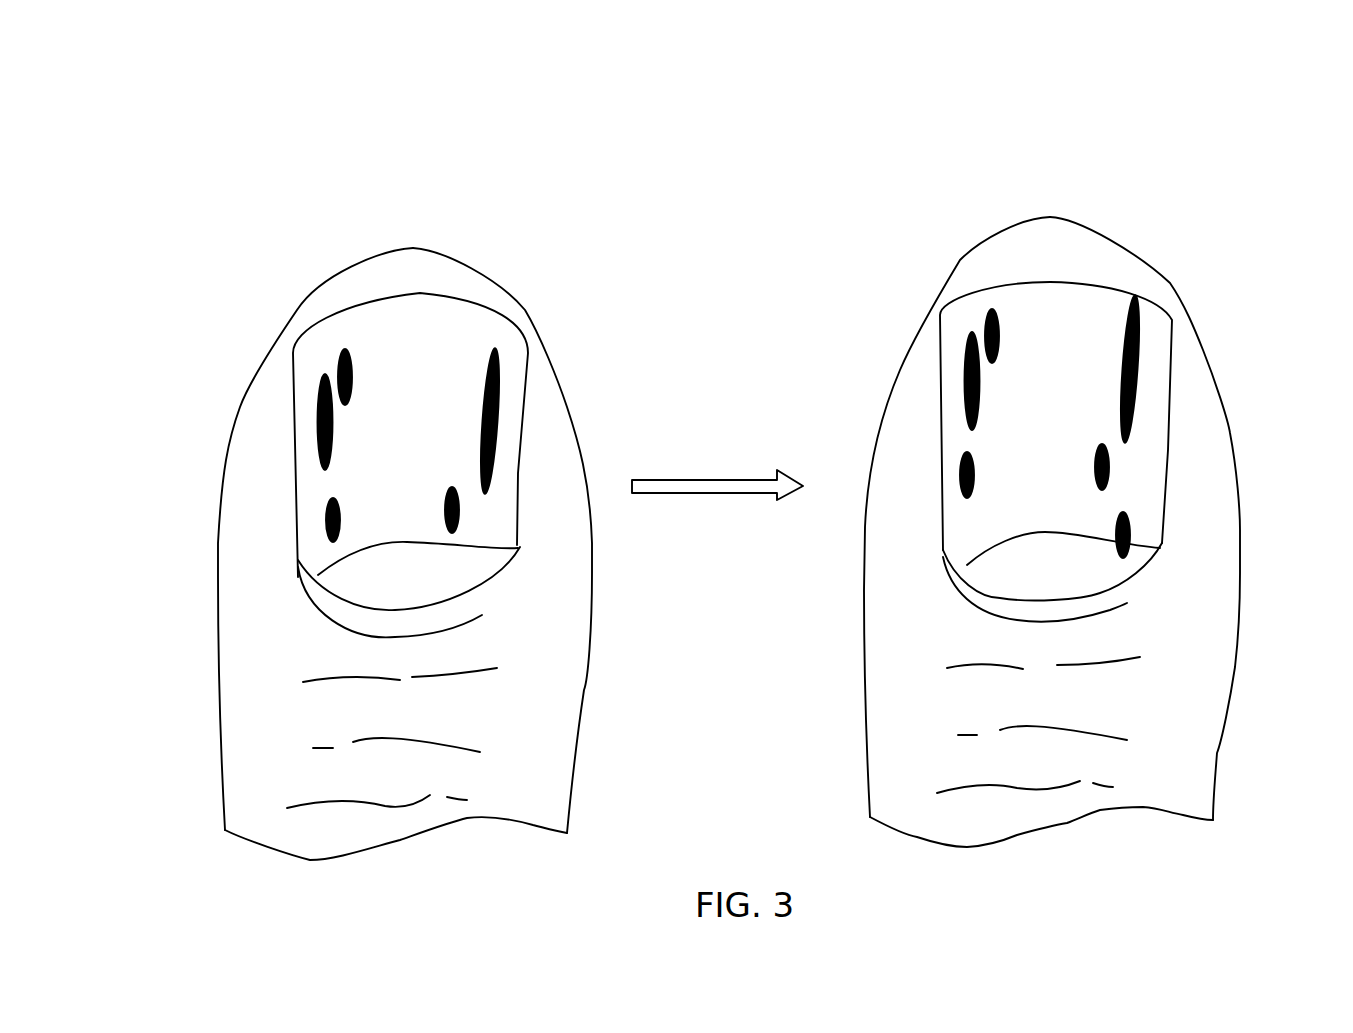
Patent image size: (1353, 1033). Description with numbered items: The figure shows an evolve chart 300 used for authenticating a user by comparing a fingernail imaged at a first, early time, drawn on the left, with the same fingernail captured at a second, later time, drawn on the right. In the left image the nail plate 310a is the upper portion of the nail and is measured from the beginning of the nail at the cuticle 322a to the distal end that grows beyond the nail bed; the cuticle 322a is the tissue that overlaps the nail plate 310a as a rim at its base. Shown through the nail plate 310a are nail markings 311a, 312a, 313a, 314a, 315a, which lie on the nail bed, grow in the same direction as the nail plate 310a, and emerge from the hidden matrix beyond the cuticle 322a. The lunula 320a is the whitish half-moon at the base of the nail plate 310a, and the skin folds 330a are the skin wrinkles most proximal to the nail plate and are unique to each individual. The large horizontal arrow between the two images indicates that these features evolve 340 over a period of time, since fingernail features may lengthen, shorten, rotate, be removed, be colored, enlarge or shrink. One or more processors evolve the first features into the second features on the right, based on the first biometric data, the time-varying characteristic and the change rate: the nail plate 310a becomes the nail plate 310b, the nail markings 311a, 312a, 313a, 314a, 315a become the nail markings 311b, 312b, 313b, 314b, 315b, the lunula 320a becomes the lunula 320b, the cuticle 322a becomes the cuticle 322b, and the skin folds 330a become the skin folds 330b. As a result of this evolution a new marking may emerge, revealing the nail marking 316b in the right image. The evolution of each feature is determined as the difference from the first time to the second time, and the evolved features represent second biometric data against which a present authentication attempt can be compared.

The evolve chart 300 is at (250, 86).
The nail plate 310a is at (360, 220).
The nail plate 310b is at (1094, 191).
The nail marking 311a is at (340, 356).
The nail marking 311b is at (985, 310).
The nail marking 312a is at (318, 405).
The nail marking 312b is at (963, 360).
The nail marking 313a is at (325, 510).
The nail marking 313b is at (960, 477).
The nail marking 314a is at (497, 372).
The nail marking 314b is at (1138, 343).
The nail marking 315a is at (459, 510).
The nail marking 315b is at (1110, 460).
The nail marking 316b is at (1130, 530).
The lunula 320a is at (442, 586).
The lunula 320b is at (1107, 575).
The cuticle 322a is at (423, 622).
The cuticle 322b is at (1093, 607).
The skin folds 330a is at (474, 704).
The skin folds 330b is at (1129, 701).
The evolve 340 is at (710, 479).